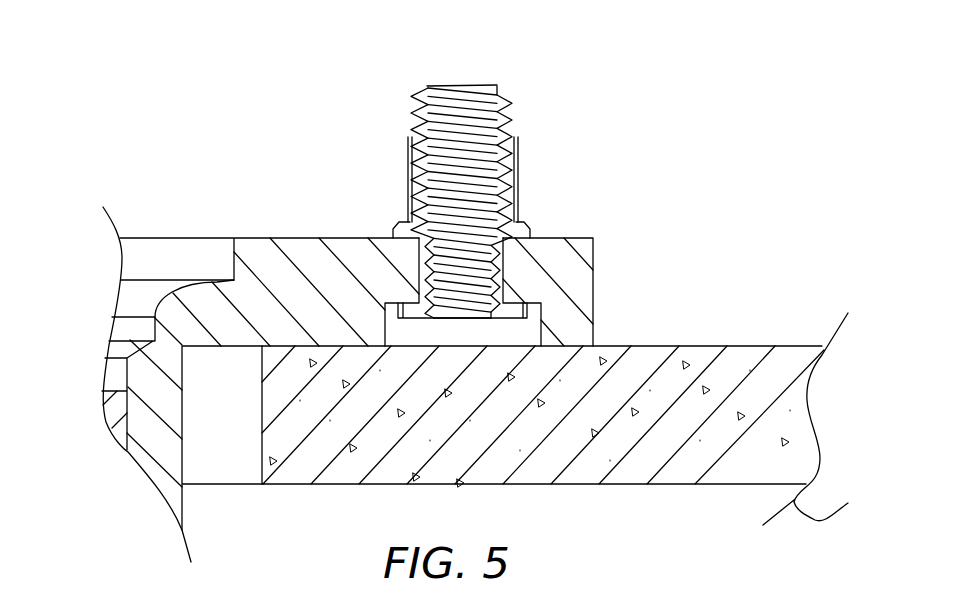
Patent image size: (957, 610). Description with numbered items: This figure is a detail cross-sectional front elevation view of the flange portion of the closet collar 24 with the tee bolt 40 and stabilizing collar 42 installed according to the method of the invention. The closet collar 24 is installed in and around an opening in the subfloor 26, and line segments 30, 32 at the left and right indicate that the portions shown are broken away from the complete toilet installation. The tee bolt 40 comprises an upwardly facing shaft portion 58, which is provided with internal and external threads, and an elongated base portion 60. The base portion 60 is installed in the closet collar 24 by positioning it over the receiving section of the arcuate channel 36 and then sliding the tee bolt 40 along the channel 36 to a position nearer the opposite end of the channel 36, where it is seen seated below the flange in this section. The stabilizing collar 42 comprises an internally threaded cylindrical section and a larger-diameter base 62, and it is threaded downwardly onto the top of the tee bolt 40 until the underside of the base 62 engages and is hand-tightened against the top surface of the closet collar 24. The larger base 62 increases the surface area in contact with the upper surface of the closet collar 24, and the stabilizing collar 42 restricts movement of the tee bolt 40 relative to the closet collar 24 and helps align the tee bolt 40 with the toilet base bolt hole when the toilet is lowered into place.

The closet collar 24 is at (583, 278).
The subfloor 26 is at (583, 485).
The line segment 30 is at (112, 222).
The line segment 32 is at (825, 419).
The arcuate channel 36 is at (522, 333).
The tee bolt 40 is at (506, 84).
The stabilizing collar 42 is at (518, 182).
The shaft portion 58 is at (420, 112).
The base portion 60 is at (413, 312).
The base 62 is at (403, 222).